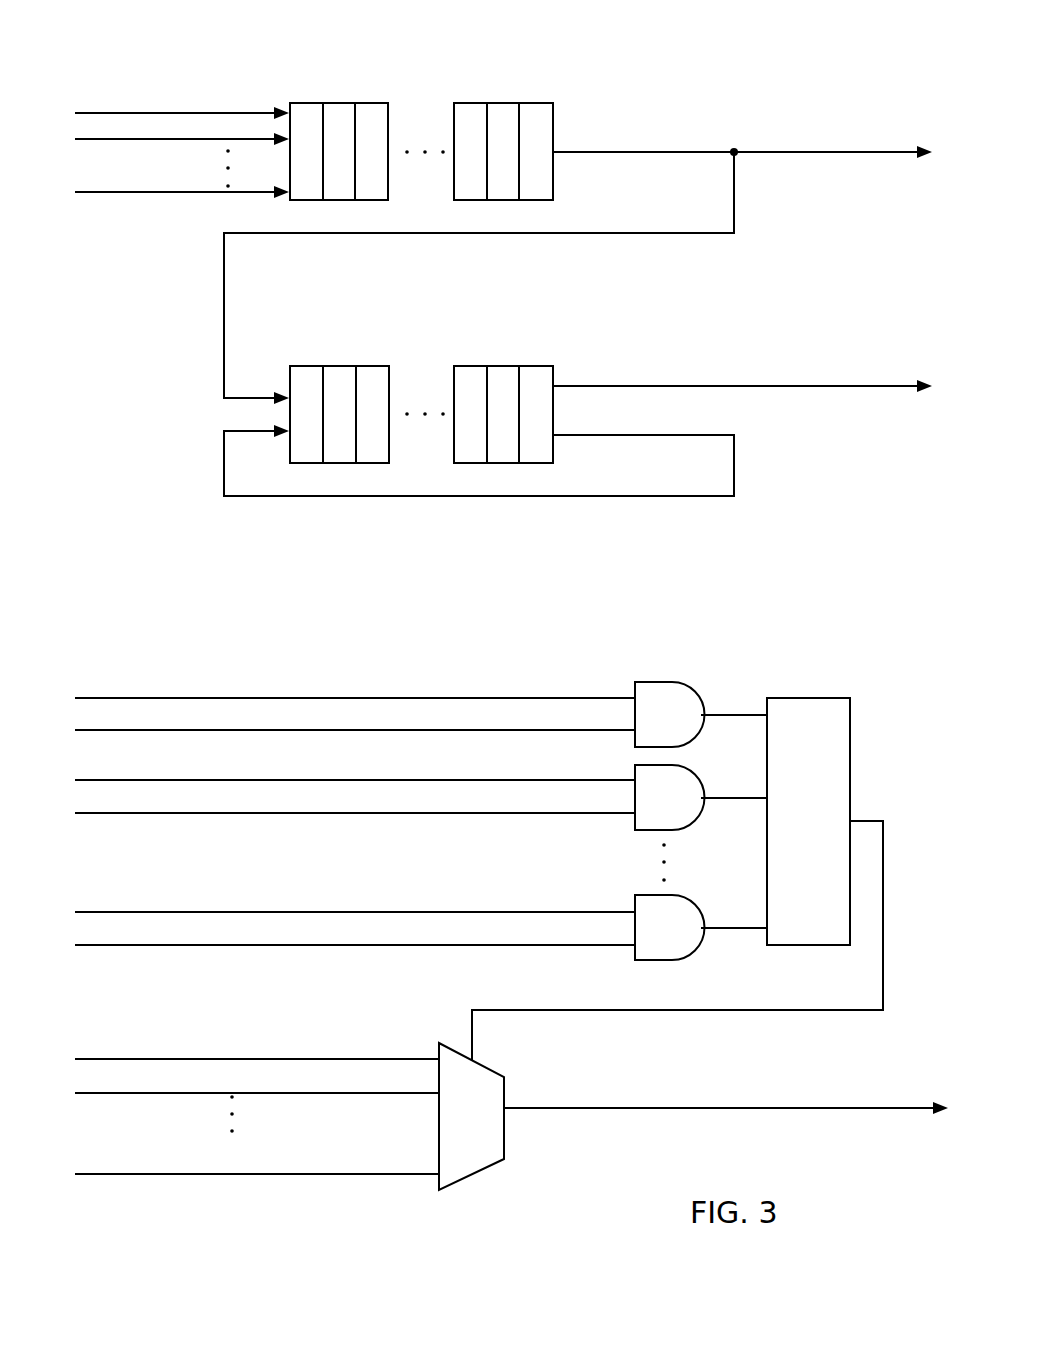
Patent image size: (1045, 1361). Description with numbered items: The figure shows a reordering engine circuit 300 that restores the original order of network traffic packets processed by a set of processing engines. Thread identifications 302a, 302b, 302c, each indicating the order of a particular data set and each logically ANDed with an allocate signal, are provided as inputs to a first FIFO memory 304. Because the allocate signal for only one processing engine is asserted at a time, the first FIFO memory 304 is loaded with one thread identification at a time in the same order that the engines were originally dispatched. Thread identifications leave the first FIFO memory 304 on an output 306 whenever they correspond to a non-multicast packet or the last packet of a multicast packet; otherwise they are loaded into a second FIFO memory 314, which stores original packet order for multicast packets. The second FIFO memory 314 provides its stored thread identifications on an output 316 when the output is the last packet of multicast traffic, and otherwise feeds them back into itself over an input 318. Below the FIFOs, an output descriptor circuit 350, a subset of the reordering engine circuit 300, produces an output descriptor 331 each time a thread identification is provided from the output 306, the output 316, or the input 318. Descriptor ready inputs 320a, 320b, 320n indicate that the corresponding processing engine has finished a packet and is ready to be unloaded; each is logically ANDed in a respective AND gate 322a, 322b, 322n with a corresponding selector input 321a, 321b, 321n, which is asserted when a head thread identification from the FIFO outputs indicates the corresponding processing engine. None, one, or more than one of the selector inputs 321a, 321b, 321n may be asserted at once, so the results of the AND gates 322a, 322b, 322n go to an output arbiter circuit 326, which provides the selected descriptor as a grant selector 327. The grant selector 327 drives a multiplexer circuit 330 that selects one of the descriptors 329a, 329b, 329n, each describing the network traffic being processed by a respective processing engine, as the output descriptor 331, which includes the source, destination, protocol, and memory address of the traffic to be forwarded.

The reordering engine circuit 300 is at (762, 78).
The thread identification 302a is at (100, 111).
The thread identification 302b is at (92, 138).
The thread identification 302c is at (92, 195).
The first FIFO memory 304 is at (540, 102).
The output 306 is at (672, 151).
The second FIFO memory 314 is at (540, 365).
The output 316 is at (656, 386).
The input 318 is at (734, 462).
The output descriptor circuit 350 is at (750, 600).
The descriptor ready input 320a is at (268, 697).
The descriptor ready input 320b is at (348, 779).
The descriptor ready input 320n is at (352, 911).
The selector input 321a is at (238, 731).
The selector input 321b is at (272, 814).
The selector input 321n is at (275, 946).
The AND gate 322a is at (701, 714).
The AND gate 322b is at (701, 797).
The AND gate 322n is at (701, 927).
The output arbiter circuit 326 is at (808, 821).
The grant selector 327 is at (573, 1011).
The descriptor 329a is at (246, 1058).
The descriptor 329b is at (336, 1094).
The descriptor 329n is at (238, 1175).
The multiplexer circuit 330 is at (471, 1116).
The output descriptor 331 is at (738, 1109).